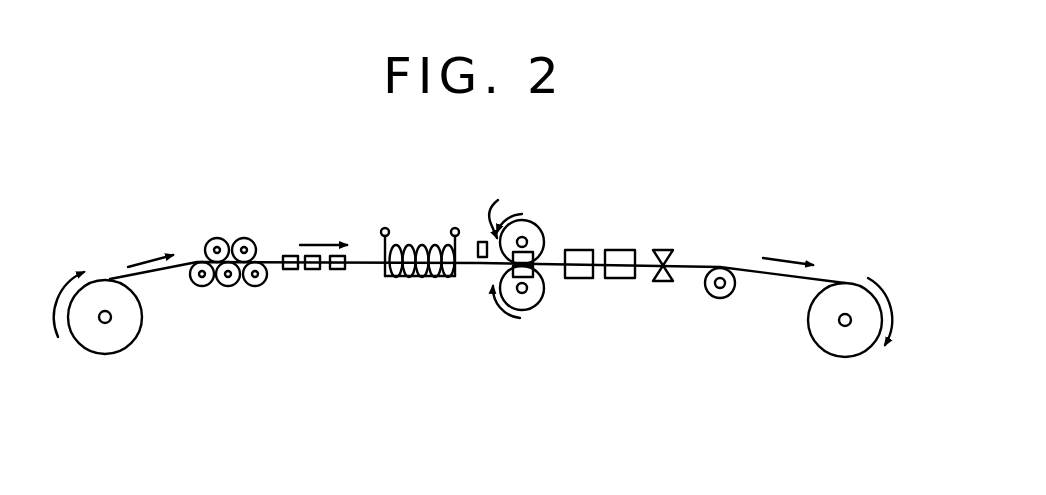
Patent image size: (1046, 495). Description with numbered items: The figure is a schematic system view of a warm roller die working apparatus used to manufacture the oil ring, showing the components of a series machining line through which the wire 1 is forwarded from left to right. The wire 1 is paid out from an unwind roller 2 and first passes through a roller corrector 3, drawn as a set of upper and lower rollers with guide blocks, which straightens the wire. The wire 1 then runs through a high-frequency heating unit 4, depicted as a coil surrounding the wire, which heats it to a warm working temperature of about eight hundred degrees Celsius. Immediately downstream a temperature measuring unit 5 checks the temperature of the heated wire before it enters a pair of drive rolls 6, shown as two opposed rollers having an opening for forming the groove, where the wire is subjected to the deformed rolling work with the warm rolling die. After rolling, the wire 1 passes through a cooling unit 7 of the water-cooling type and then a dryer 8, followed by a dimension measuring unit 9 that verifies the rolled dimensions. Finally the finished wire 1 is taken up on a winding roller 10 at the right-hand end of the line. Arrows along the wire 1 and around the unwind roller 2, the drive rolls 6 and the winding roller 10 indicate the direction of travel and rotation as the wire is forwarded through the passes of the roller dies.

The wire 1 is at (268, 260).
The unwind roller 2 is at (100, 354).
The roller corrector 3 is at (185, 285).
The high-frequency heating unit 4 is at (420, 277).
The temperature measuring unit 5 is at (478, 242).
The pressure rollers 6 is at (532, 312).
The cooling unit 7 is at (573, 250).
The dryer 8 is at (622, 280).
The dimension measuring unit 9 is at (663, 250).
The winding roller 10 is at (837, 355).